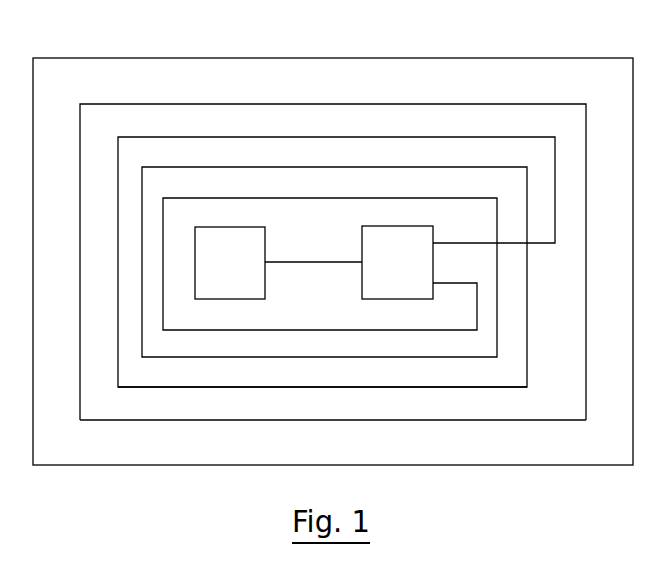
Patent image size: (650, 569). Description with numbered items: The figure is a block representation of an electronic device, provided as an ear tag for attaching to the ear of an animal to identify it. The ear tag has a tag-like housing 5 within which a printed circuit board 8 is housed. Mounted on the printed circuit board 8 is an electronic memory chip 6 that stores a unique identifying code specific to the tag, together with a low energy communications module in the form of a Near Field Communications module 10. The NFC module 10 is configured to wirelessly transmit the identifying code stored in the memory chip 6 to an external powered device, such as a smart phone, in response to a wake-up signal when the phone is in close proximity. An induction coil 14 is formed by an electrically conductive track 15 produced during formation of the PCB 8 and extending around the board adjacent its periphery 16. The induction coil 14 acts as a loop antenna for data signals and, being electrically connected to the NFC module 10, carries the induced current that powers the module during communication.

The housing 5 is at (79, 57).
The electronic memory chip 6 is at (252, 247).
The printed circuit board 8 is at (153, 103).
The Near Field Communications module 10 is at (373, 275).
The induction coil 14 is at (297, 137).
The electrically conductive track 15 is at (248, 385).
The periphery 16 is at (123, 422).